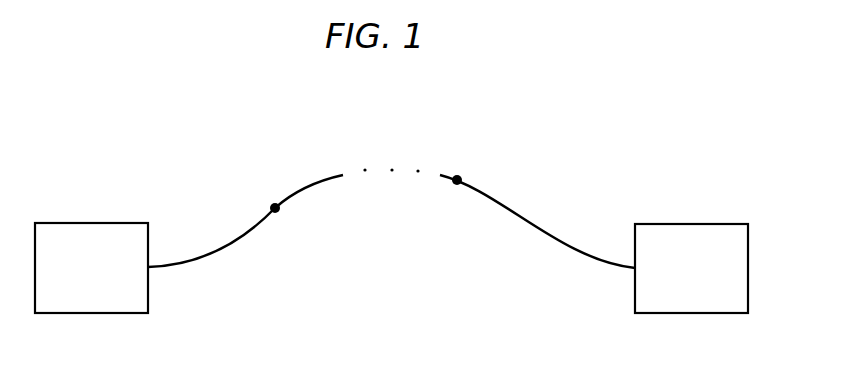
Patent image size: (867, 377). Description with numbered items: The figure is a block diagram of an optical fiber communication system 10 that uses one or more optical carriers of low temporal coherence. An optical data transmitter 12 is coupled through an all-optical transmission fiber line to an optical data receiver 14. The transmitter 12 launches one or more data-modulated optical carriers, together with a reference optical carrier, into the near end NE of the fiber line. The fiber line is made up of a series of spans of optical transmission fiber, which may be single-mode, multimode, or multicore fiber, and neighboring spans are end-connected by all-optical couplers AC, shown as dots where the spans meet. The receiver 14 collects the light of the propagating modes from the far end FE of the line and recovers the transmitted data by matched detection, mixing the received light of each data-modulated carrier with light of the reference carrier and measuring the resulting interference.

The optical fiber communication system 10 is at (530, 147).
The optical data transmitter 12 is at (103, 283).
The optical data receiver 14 is at (703, 283).
The near end NE is at (152, 262).
The far end FE is at (631, 278).
The all-optical coupler AC is at (280, 214).